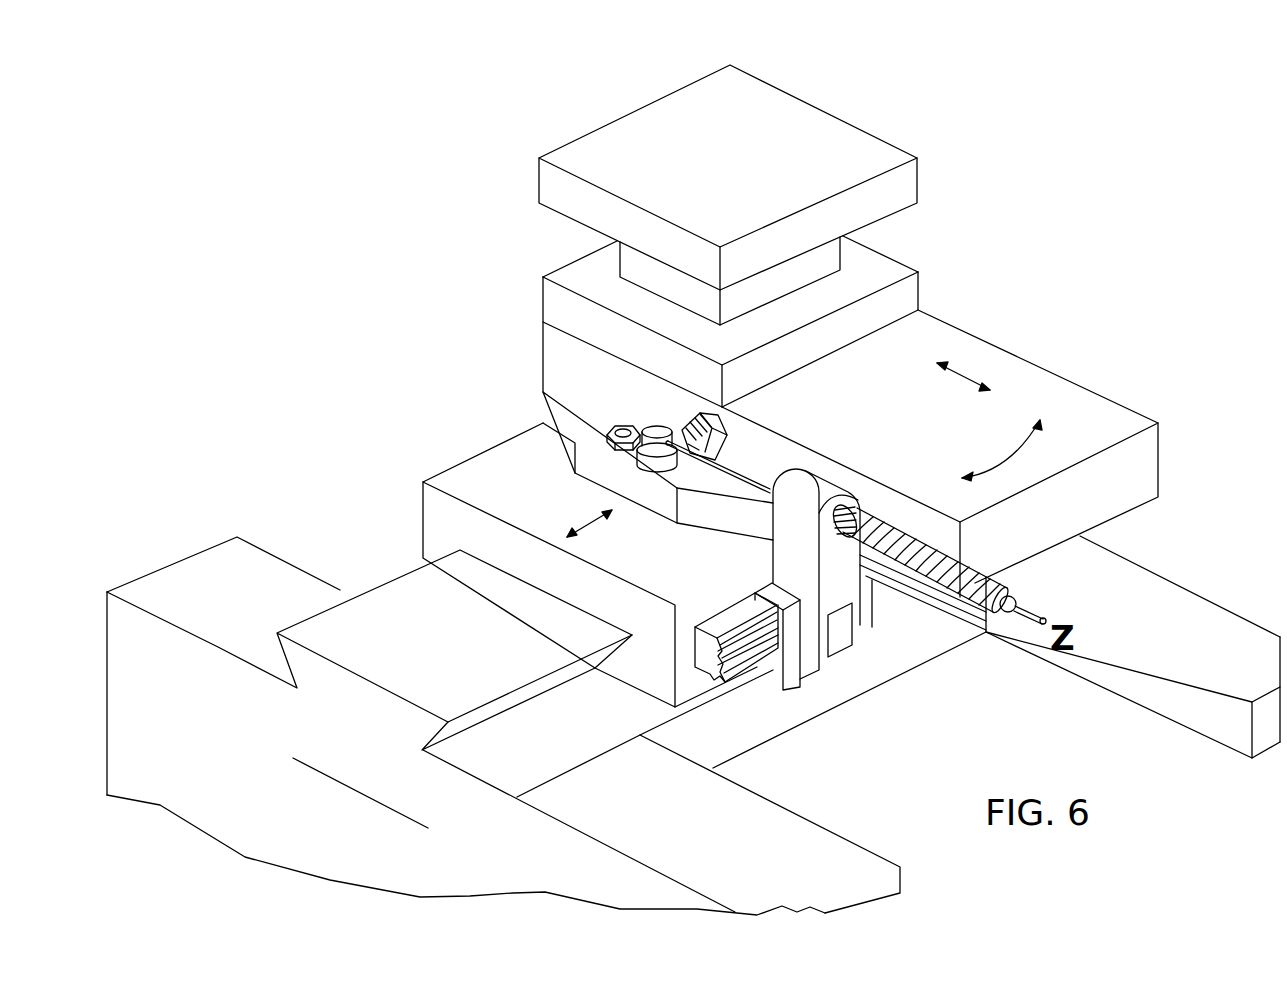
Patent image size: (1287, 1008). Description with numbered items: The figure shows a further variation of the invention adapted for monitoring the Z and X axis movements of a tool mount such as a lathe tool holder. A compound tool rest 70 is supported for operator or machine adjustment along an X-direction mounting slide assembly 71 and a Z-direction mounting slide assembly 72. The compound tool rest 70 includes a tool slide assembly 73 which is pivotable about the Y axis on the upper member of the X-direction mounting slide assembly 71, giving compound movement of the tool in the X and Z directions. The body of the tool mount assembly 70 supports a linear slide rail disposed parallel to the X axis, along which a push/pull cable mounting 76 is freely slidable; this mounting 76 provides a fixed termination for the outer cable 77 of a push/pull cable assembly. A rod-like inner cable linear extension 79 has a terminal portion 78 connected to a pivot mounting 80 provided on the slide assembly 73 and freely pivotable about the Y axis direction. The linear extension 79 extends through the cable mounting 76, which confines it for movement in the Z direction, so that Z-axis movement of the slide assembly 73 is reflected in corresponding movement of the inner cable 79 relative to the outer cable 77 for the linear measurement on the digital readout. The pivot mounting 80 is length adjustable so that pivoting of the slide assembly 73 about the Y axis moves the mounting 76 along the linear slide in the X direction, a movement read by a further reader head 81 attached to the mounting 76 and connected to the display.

The compound tool rest 70 is at (968, 170).
The X-direction mounting slide assembly 71 is at (456, 660).
The Z-direction mounting slide assembly 72 is at (1137, 590).
The tool slide assembly 73 is at (947, 342).
The push/pull cable mounting 76 is at (808, 482).
The outer cable 77 is at (945, 545).
The terminal portion 78 is at (653, 425).
The inner cable linear extension 79 is at (738, 463).
The pivot mounting 80 is at (640, 460).
The reader head 81 is at (837, 637).